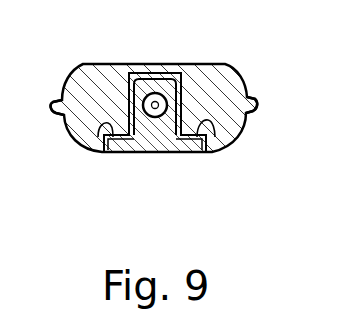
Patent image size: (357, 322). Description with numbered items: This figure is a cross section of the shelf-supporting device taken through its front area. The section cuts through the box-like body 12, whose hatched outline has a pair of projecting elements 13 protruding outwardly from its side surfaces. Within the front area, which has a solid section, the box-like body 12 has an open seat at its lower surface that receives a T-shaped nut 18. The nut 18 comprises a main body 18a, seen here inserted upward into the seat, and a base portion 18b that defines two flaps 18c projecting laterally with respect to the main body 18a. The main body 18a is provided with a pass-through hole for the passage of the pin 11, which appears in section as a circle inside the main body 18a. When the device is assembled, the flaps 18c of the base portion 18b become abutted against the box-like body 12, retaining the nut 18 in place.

The pin 11 is at (157, 100).
The box-like body 12 is at (108, 84).
The projecting elements 13 is at (258, 101).
The T-shaped nut 18 is at (155, 126).
The main body 18a is at (183, 100).
The base portion 18b is at (117, 150).
The flaps 18c is at (110, 128).